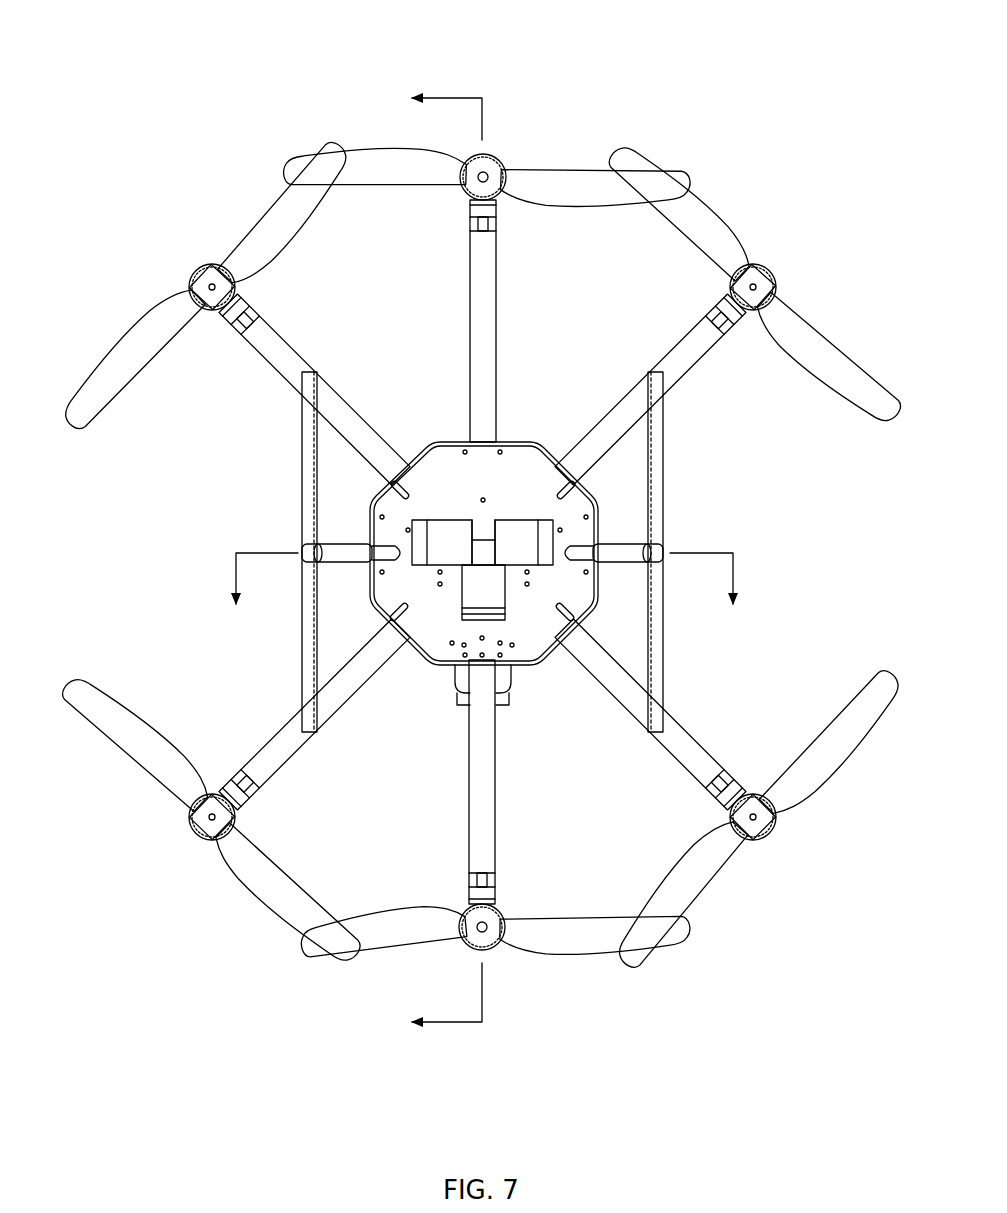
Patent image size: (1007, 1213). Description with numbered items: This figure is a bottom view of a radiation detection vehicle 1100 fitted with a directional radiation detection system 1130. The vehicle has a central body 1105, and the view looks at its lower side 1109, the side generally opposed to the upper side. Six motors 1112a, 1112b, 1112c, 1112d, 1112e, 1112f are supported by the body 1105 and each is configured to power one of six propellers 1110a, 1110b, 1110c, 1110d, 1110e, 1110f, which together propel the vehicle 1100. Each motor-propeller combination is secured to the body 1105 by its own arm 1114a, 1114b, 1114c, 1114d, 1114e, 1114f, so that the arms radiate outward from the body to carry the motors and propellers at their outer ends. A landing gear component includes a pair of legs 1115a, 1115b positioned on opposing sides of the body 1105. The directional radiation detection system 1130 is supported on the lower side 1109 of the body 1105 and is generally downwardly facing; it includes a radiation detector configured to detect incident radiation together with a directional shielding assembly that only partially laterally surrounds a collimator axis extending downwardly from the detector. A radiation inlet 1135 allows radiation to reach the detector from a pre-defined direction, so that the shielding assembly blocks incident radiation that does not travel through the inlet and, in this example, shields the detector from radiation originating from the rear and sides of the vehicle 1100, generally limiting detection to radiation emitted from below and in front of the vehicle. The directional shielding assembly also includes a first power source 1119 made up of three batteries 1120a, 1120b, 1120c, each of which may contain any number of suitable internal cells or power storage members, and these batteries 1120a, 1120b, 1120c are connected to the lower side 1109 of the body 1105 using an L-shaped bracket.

The radiation detection vehicle 1100 is at (220, 107).
The body 1105 is at (455, 455).
The lower side 1109 is at (507, 650).
The propeller 1110a is at (535, 178).
The propeller 1110b is at (805, 330).
The propeller 1110c is at (817, 775).
The propeller 1110d is at (568, 935).
The propeller 1110e is at (155, 763).
The propeller 1110f is at (145, 340).
The motor 1112a is at (490, 174).
The motor 1112b is at (762, 280).
The motor 1112c is at (768, 833).
The motor 1112d is at (495, 944).
The motor 1112e is at (195, 824).
The motor 1112f is at (200, 278).
The arm 1114a is at (480, 323).
The arm 1114b is at (688, 342).
The arm 1114c is at (697, 765).
The arm 1114d is at (476, 849).
The arm 1114e is at (277, 758).
The arm 1114f is at (280, 348).
The leg 1115a is at (308, 478).
The leg 1115b is at (655, 478).
The first power source 1119 is at (450, 582).
The battery 1120a is at (515, 538).
The battery 1120b is at (495, 598).
The battery 1120c is at (438, 550).
The directional radiation detection system 1130 is at (532, 577).
The radiation inlet 1135 is at (480, 533).